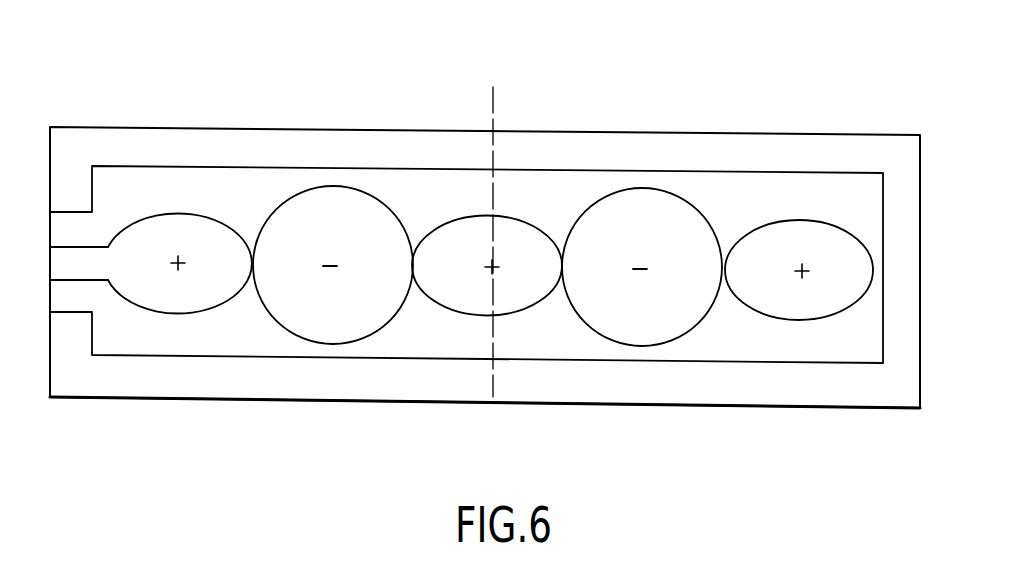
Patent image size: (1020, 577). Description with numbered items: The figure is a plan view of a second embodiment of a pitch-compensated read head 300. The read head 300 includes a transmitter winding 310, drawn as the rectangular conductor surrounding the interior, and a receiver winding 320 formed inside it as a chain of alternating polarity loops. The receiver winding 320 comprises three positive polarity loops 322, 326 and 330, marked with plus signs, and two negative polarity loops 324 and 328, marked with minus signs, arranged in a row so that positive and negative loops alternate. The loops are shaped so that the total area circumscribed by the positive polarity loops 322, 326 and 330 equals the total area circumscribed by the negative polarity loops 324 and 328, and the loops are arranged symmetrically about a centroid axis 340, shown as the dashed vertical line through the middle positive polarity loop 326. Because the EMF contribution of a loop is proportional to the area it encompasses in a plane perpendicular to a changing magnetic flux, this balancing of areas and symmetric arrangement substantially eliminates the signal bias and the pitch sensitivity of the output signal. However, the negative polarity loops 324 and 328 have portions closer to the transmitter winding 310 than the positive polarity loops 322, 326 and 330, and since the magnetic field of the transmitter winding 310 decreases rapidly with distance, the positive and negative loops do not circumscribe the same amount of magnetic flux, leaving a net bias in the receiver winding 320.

The pitch-compensated read head 300 is at (565, 115).
The transmitter winding 310 is at (754, 172).
The receiver winding 320 is at (276, 198).
The positive polarity loop 322 is at (222, 305).
The negative polarity loop 324 is at (330, 343).
The positive polarity loop 326 is at (517, 313).
The negative polarity loop 328 is at (650, 347).
The positive polarity loop 330 is at (795, 319).
The centroid axis 340 is at (495, 122).